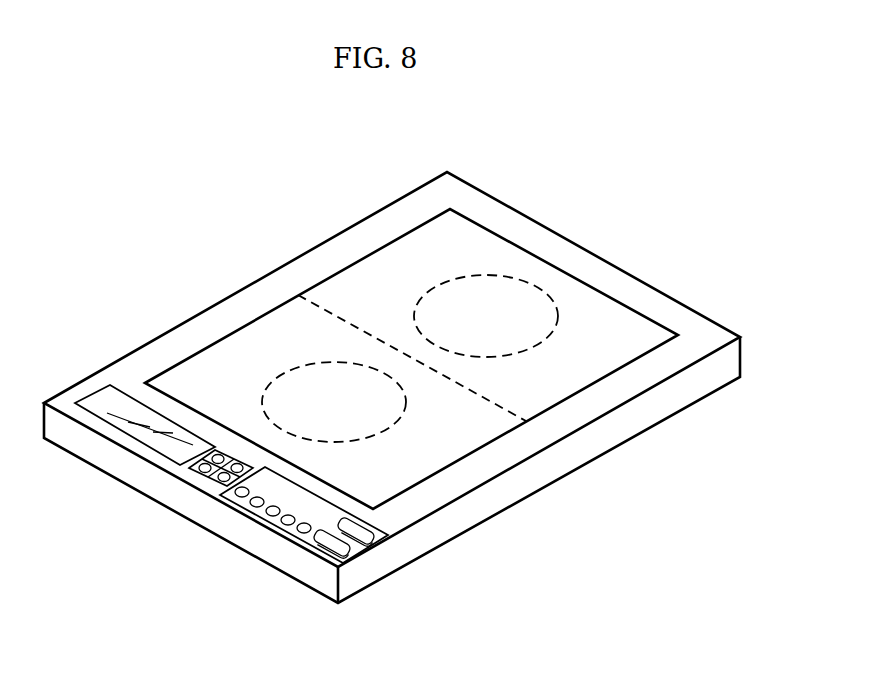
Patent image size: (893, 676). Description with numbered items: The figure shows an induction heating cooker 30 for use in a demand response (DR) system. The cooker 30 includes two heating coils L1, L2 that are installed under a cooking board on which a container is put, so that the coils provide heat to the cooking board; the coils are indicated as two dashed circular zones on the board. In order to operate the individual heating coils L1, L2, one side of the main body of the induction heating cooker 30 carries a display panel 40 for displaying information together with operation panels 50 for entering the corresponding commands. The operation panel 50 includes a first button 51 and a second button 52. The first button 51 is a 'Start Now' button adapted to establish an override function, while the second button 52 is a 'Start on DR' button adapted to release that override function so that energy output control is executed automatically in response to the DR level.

The induction heating cooker 30 is at (602, 233).
The heating coil L1 is at (285, 372).
The heating coil L2 is at (437, 287).
The display panel 40 is at (167, 450).
The operation panel 50 is at (280, 531).
The first button 51 is at (395, 527).
The second button 52 is at (360, 548).